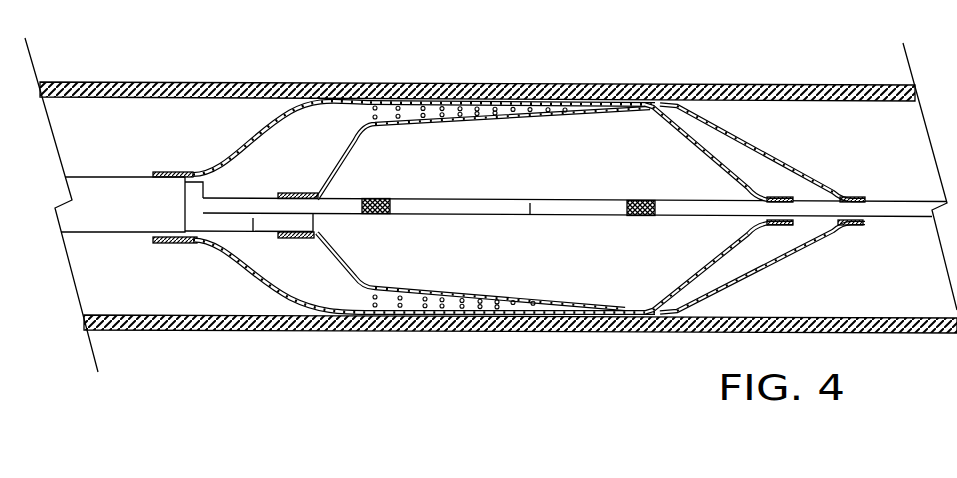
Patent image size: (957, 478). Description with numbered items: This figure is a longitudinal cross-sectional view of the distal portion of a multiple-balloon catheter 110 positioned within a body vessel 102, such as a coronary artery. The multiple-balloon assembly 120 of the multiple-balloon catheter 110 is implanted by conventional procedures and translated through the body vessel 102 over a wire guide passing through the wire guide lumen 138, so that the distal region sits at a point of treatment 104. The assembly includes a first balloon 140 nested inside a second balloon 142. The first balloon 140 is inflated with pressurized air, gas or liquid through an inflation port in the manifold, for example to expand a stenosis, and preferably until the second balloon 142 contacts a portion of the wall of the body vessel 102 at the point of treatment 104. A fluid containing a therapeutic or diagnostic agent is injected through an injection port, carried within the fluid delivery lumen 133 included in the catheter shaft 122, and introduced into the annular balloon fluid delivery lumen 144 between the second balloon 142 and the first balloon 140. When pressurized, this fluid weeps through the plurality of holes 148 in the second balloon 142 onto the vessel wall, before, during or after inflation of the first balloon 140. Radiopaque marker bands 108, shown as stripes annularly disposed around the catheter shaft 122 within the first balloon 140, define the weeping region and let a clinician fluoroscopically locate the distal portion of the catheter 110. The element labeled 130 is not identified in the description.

The body vessel 102 is at (885, 117).
The point of treatment 104 is at (463, 101).
The marker bands 108 is at (633, 217).
The multiple-balloon catheter 110 is at (266, 62).
The multiple-balloon assembly 120 is at (262, 301).
The catheter shaft 122 is at (113, 182).
The proximal mounting collar 130 is at (253, 218).
The fluid delivery lumen 133 is at (200, 195).
The wire guide lumen 138 is at (530, 203).
The first balloon 140 is at (697, 137).
The second balloon 142 is at (733, 122).
The annular balloon fluid delivery lumen 144 is at (306, 144).
The plurality of holes 148 is at (500, 311).